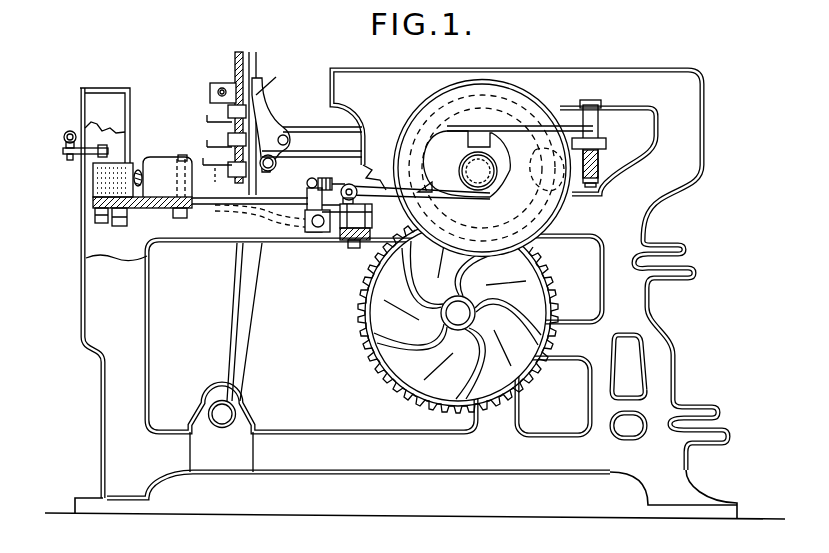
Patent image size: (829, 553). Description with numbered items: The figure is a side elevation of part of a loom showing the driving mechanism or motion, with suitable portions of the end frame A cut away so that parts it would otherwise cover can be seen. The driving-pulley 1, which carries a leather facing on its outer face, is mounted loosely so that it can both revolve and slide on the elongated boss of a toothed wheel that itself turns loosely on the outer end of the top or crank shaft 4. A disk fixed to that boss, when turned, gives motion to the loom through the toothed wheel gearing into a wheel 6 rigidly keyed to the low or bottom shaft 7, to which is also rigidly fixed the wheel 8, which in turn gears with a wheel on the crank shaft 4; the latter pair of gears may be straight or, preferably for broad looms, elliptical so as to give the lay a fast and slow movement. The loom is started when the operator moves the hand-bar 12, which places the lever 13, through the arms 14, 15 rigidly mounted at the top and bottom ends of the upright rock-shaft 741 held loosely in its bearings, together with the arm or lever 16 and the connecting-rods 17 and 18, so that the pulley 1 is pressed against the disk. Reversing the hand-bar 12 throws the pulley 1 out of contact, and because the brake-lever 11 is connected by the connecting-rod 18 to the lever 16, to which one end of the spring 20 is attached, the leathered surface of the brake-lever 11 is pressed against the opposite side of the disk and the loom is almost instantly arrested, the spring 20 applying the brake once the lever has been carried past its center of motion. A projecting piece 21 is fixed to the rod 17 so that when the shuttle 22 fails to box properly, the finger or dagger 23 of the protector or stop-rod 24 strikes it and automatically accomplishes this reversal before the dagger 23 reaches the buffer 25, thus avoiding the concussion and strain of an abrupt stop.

The driving-pulley 1 is at (494, 168).
The crank shaft 4 is at (478, 171).
The wheel 6 is at (458, 316).
The bottom shaft 7 is at (458, 313).
The wheel 8 is at (457, 319).
The brake-lever 11 is at (594, 143).
The hand-bar 12 is at (61, 139).
The lever 13 is at (419, 191).
The arm 14 is at (67, 154).
The arm 15 is at (105, 223).
The arm or lever 16 is at (372, 211).
The connecting-rod 17 is at (193, 208).
The connecting-rod 18 is at (350, 184).
The spring 20 is at (326, 179).
The projecting piece 21 is at (182, 156).
The shuttle 22 is at (233, 123).
The finger or dagger 23 is at (217, 152).
The protector or stop-rod 24 is at (306, 133).
The buffer 25 is at (167, 177).
The upright rock-shaft 741 is at (103, 147).
The end frame A is at (415, 294).